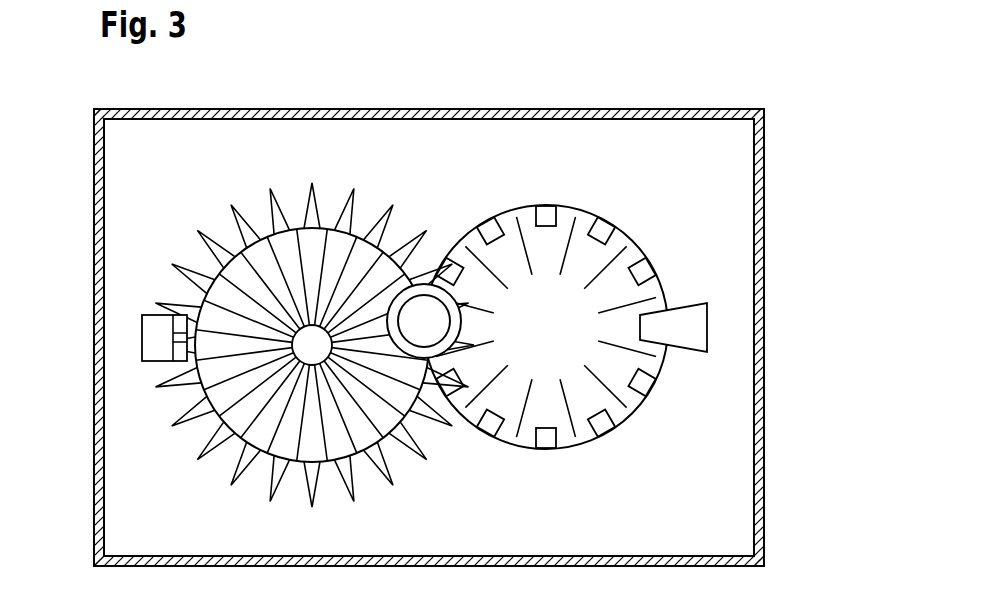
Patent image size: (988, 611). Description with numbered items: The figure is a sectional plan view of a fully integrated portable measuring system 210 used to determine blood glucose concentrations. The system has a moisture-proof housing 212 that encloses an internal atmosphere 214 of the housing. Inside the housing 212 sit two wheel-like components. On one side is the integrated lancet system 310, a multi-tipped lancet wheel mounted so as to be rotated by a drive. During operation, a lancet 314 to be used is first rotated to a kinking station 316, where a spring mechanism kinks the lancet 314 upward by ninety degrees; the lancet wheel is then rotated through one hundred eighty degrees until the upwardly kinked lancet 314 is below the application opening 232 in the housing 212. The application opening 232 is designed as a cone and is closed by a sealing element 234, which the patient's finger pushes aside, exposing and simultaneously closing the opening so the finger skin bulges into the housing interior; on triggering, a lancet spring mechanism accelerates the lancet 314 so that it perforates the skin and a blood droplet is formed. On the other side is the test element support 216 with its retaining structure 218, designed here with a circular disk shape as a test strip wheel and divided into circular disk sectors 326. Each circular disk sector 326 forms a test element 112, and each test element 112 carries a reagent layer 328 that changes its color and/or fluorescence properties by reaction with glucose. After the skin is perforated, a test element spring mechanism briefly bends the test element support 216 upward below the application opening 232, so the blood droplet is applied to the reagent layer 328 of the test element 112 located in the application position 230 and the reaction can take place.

The test element 112 is at (578, 325).
The portable measuring system 210 is at (459, 297).
The housing 212 is at (487, 110).
The internal atmosphere 214 is at (733, 497).
The test element support 216 is at (584, 345).
The retaining structure 218 is at (546, 360).
The application position 230 is at (455, 413).
The application opening 232 is at (424, 321).
The sealing element 234 is at (423, 333).
The lancet system 310 is at (312, 322).
The lancet 314 is at (190, 266).
The kinking station 316 is at (152, 338).
The circular disk sector 326 is at (597, 397).
The reagent layer 328 is at (602, 427).